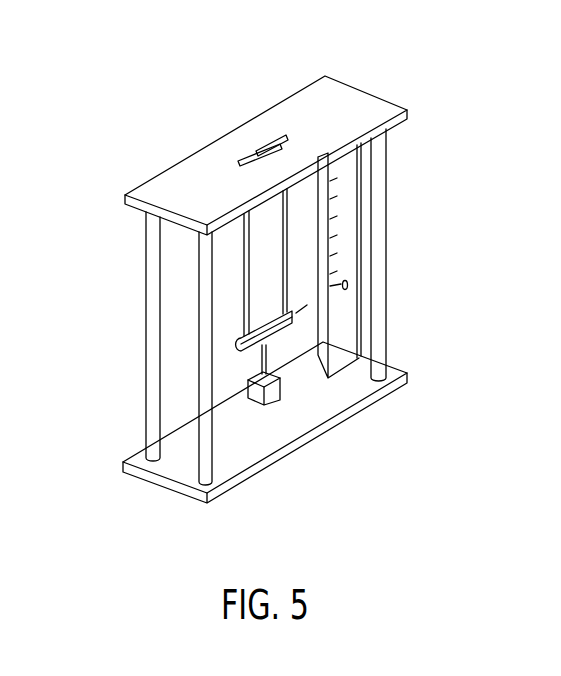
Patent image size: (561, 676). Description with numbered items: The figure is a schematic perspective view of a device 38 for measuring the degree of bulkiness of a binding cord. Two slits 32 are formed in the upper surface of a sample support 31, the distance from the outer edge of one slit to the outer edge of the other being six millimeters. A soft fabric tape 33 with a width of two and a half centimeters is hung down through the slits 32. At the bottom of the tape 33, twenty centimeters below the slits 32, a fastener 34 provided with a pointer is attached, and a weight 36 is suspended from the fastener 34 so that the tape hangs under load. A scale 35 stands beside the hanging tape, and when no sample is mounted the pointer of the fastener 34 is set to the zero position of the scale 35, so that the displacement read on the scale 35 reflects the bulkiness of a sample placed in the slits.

The device 38 is at (126, 103).
The sample support 31 is at (349, 98).
The slits 32 is at (257, 150).
The soft fabric tape 33 is at (246, 293).
The fastener 34 is at (237, 348).
The scale 35 is at (354, 203).
The weight 36 is at (273, 398).